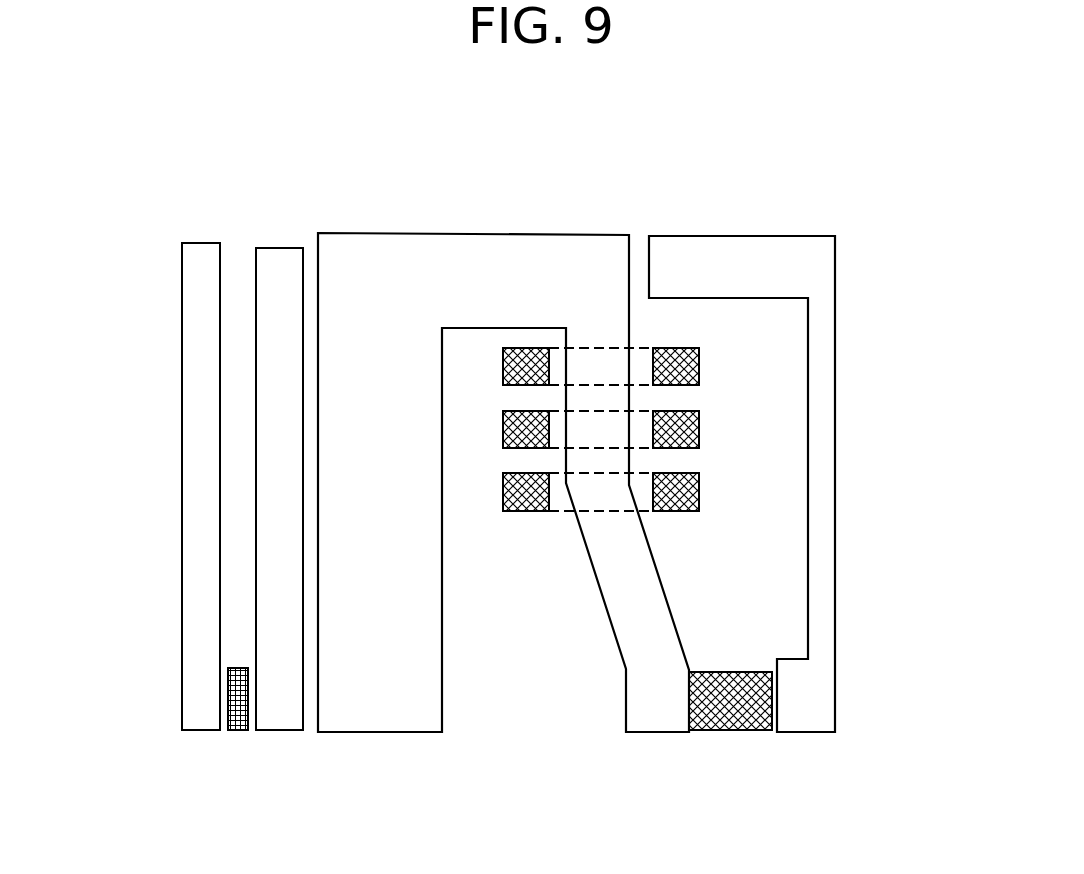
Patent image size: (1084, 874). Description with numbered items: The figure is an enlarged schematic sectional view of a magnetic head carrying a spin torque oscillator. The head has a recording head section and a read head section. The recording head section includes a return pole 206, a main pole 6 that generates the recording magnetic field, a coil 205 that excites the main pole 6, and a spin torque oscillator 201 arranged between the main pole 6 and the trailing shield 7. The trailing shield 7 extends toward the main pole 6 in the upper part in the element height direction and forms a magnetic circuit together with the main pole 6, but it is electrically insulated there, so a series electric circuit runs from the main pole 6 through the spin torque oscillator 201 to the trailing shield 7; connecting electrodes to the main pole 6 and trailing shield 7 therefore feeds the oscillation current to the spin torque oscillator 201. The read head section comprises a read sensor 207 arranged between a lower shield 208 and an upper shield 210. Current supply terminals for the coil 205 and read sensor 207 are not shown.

The lower shield 208 is at (190, 547).
The upper shield 210 is at (282, 740).
The read sensor 207 is at (238, 740).
The return pole 206 is at (416, 740).
The trailing shield 7 is at (832, 618).
The spin torque oscillator 201 is at (768, 742).
The coil 205 is at (522, 515).
The main pole 6 is at (630, 733).